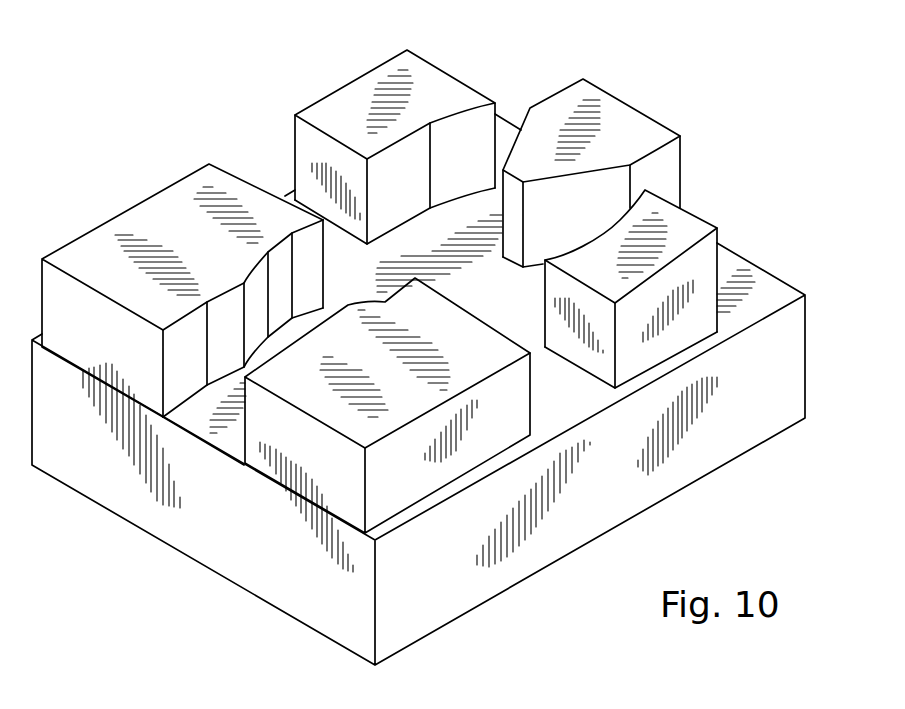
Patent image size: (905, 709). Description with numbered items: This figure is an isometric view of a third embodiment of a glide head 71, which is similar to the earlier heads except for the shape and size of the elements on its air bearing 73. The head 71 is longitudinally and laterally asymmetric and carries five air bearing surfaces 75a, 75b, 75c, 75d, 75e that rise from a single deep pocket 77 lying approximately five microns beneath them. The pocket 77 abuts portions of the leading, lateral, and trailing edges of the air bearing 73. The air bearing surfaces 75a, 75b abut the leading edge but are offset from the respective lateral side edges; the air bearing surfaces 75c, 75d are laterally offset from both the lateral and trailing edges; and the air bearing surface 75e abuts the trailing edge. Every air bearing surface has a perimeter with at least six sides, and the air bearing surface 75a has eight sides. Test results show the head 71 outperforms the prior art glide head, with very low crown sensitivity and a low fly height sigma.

The glide head 71 is at (148, 599).
The air bearing 73 is at (435, 351).
The air bearing surface 75a is at (165, 216).
The air bearing surface 75b is at (368, 433).
The air bearing surface 75c is at (335, 110).
The air bearing surface 75d is at (705, 240).
The air bearing surface 75e is at (635, 128).
The deep pocket 77 is at (768, 290).